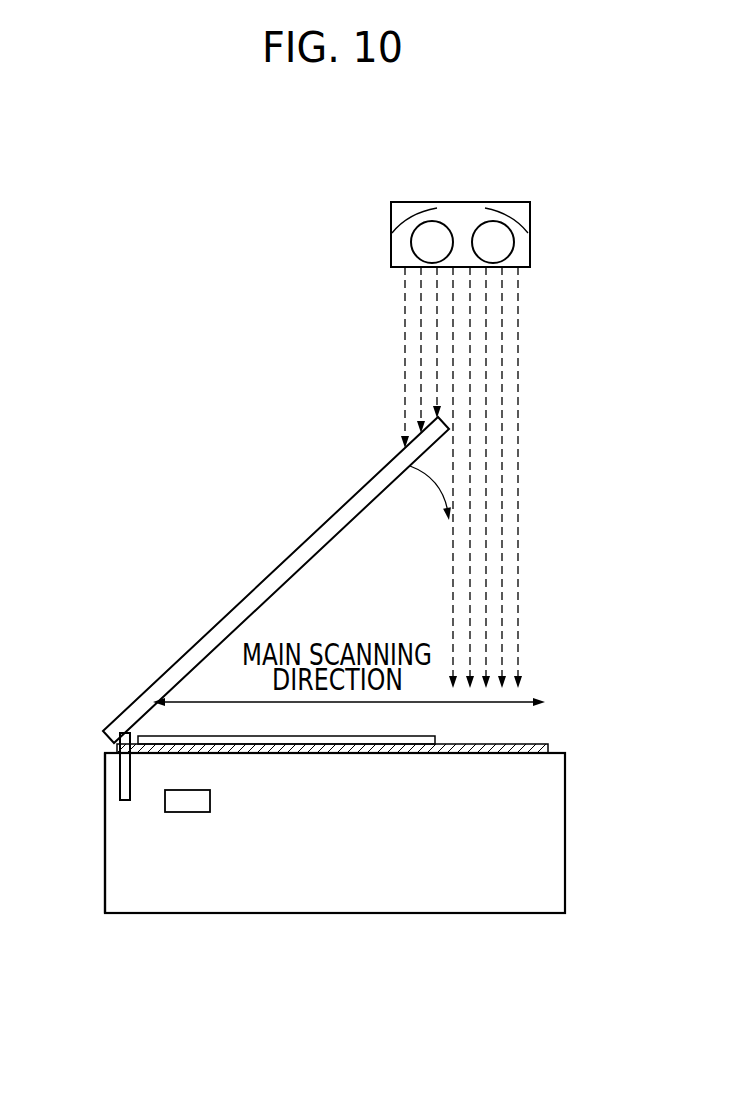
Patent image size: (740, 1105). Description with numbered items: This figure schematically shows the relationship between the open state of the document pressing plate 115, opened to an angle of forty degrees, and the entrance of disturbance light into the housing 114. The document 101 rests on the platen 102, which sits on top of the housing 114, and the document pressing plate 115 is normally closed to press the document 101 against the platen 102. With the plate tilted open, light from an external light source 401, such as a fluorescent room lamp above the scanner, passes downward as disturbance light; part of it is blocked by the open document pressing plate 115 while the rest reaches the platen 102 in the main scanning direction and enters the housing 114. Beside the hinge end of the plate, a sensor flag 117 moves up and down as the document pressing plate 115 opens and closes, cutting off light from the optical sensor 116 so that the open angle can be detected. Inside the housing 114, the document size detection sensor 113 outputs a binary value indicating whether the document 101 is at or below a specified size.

The external light source 401 is at (391, 232).
The document pressing plate 115 is at (375, 477).
The sensor flag 117 is at (116, 749).
The optical sensor 116 is at (104, 830).
The housing 114 is at (567, 814).
The document 101 is at (215, 733).
The platen 102 is at (457, 742).
The document size detection sensor 113 is at (192, 790).